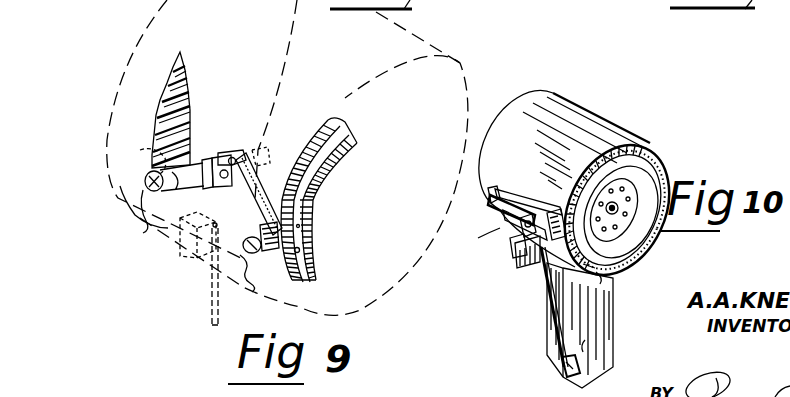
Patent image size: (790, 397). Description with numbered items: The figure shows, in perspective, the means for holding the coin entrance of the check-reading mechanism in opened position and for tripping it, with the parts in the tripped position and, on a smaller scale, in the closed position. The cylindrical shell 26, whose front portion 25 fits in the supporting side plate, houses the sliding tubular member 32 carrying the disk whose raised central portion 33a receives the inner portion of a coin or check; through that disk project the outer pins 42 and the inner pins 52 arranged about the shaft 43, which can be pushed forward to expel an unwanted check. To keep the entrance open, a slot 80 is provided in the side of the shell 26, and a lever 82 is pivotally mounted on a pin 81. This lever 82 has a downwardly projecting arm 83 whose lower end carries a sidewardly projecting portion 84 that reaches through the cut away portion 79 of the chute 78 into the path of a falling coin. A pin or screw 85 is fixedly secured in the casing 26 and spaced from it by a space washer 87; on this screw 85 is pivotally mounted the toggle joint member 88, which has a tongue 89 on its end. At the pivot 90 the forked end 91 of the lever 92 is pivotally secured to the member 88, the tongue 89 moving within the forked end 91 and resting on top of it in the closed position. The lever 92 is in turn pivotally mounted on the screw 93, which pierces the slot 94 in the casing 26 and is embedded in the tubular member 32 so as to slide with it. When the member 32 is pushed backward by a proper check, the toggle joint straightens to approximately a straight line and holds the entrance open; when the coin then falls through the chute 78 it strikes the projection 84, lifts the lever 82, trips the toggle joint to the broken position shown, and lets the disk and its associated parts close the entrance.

In FIG. 9, the cylindrical shell 26 is at (106, 97).
In FIG. 10, the cylindrical shell 26 is at (610, 115).
In FIG. 9, the tubular member 32 is at (165, 77).
In FIG. 9, the slot 94 is at (160, 155).
In FIG. 10, the slot 94 is at (517, 195).
In FIG. 9, the screw 93 is at (145, 181).
In FIG. 10, the screw 93 is at (515, 220).
In FIG. 9, the forked end 91 is at (221, 161).
In FIG. 9, the pivot 90 is at (226, 164).
In FIG. 10, the pivot 90 is at (520, 245).
In FIG. 9, the tongue 89 is at (242, 150).
In FIG. 10, the tongue 89 is at (530, 215).
In FIG. 9, the slot 80 is at (259, 160).
In FIG. 10, the slot 80 is at (556, 212).
In FIG. 9, the toggle joint mechanism member 88 is at (278, 158).
In FIG. 9, the space washer 87 is at (288, 233).
In FIG. 9, the pin 81 is at (300, 251).
In FIG. 10, the pin 81 is at (595, 268).
In FIG. 9, the lever 92 is at (144, 219).
In FIG. 10, the lever 92 is at (520, 233).
In FIG. 9, the lever 82 is at (183, 262).
In FIG. 10, the lever 82 is at (530, 264).
In FIG. 9, the downwardly projecting arm 83 is at (209, 290).
In FIG. 10, the downwardly projecting arm 83 is at (547, 280).
In FIG. 9, the pin or screw 85 is at (249, 279).
In FIG. 10, the pin or screw 85 is at (600, 276).
In FIG. 10, the raised central portion 33a is at (630, 146).
In FIG. 10, the front portion 25 is at (648, 169).
In FIG. 10, the pins 42 is at (664, 177).
In FIG. 10, the shaft 43 is at (620, 250).
In FIG. 10, the pins 52 is at (617, 267).
In FIG. 10, the chute 78 is at (600, 308).
In FIG. 10, the cut away portion 79 is at (593, 345).
In FIG. 10, the sidewardly projecting portion 84 is at (560, 361).